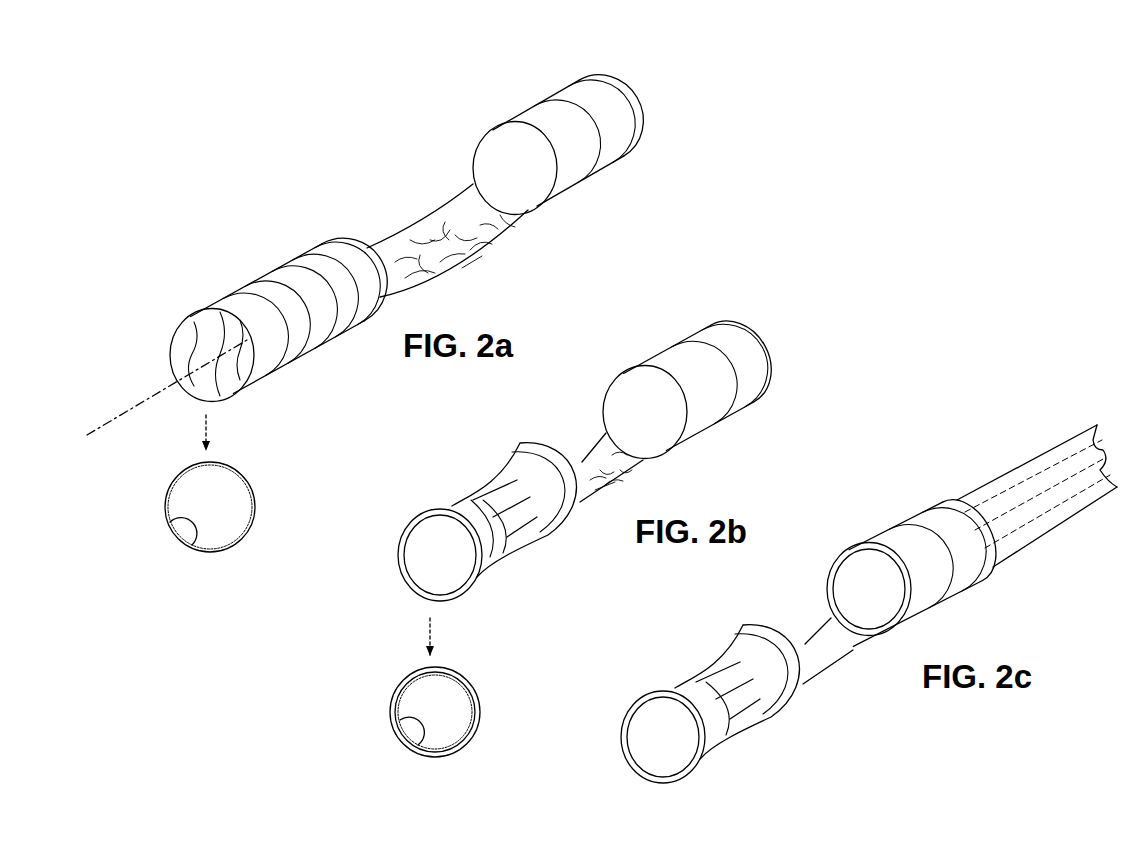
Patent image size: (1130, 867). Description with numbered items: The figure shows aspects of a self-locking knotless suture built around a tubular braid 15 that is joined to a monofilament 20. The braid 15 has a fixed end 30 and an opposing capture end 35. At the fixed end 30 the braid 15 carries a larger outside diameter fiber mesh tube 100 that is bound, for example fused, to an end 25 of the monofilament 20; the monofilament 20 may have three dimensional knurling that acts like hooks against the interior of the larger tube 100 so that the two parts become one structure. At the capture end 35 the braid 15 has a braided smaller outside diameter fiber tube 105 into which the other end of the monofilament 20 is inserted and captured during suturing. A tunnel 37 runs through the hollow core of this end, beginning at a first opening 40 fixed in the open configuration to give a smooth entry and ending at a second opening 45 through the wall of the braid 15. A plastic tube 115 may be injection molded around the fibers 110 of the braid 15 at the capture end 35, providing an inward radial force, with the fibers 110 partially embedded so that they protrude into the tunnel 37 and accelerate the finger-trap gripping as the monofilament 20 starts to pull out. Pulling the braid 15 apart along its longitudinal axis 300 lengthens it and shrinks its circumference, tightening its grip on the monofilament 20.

In FIG. 2A, the braid 15 is at (332, 134).
In FIG. 2C, the monofilament 20 is at (1036, 437).
In FIG. 2C, the end of the monofilament 25 is at (992, 483).
In FIG. 2A, the fixed end 30 is at (487, 96).
In FIG. 2C, the fixed end 30 is at (880, 475).
In FIG. 2A, the capture end 35 is at (217, 265).
In FIG. 2B, the capture end 35 is at (471, 447).
In FIG. 2C, the capture end 35 is at (690, 641).
In FIG. 2A, the tunnel 37 is at (207, 343).
In FIG. 2B, the tunnel 37 is at (437, 553).
In FIG. 2C, the tunnel 37 is at (676, 746).
In FIG. 2A, the first opening 40 is at (252, 376).
In FIG. 2A, the second opening 45 is at (363, 234).
In FIG. 2A, the larger OD fiber mesh tube 100 is at (548, 100).
In FIG. 2B, the larger OD fiber mesh tube 100 is at (670, 340).
In FIG. 2A, the smaller OD fiber tube 105 is at (287, 262).
In FIG. 2A, the fibers 110 is at (190, 548).
In FIG. 2B, the fibers 110 is at (398, 720).
In FIG. 2C, the fibers 110 is at (871, 540).
In FIG. 2B, the tube 115 is at (457, 504).
In FIG. 2C, the tube 115 is at (692, 684).
In FIG. 2A, the longitudinal axis 300 is at (150, 390).